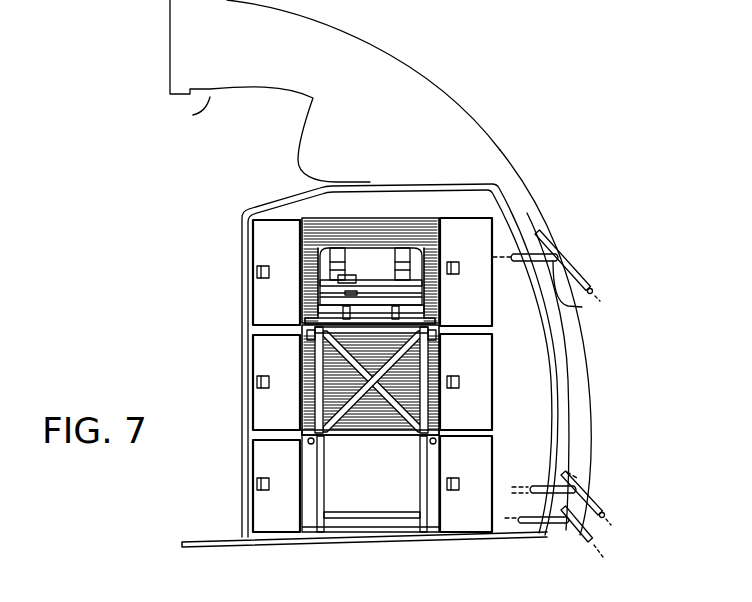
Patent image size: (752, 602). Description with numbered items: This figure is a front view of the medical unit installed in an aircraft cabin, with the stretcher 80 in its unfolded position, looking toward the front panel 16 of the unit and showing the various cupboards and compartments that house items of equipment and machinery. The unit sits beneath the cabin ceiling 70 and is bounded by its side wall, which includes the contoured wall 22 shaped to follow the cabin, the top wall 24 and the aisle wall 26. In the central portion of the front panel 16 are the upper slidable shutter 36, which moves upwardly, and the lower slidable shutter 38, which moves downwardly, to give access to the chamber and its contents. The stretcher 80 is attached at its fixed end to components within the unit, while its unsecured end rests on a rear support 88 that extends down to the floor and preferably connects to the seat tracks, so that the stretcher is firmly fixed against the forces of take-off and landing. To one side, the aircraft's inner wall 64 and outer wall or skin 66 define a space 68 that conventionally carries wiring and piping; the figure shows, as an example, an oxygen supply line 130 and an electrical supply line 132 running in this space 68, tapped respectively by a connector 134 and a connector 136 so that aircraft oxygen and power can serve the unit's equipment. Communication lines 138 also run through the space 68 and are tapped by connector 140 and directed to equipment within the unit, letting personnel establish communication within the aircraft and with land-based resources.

The cabin ceiling 70 is at (257, 91).
The front panel 16 is at (293, 212).
The top wall 24 is at (366, 187).
The upper slidable shutter 36 is at (387, 230).
The inner wall 64 is at (497, 193).
The outer wall or skin of the aircraft 66 is at (533, 195).
The space 68 is at (530, 212).
The communication lines 138 is at (573, 270).
The connector 140 is at (580, 308).
The contoured wall 22 is at (553, 363).
The stretcher 80 is at (307, 317).
The lower slidable shutter 38 is at (333, 390).
The aisle wall 26 is at (241, 445).
The rear support 88 is at (334, 487).
The connector 136 is at (543, 488).
The electrical supply line 132 is at (590, 498).
The connector 134 is at (520, 533).
The oxygen supply line 130 is at (577, 533).